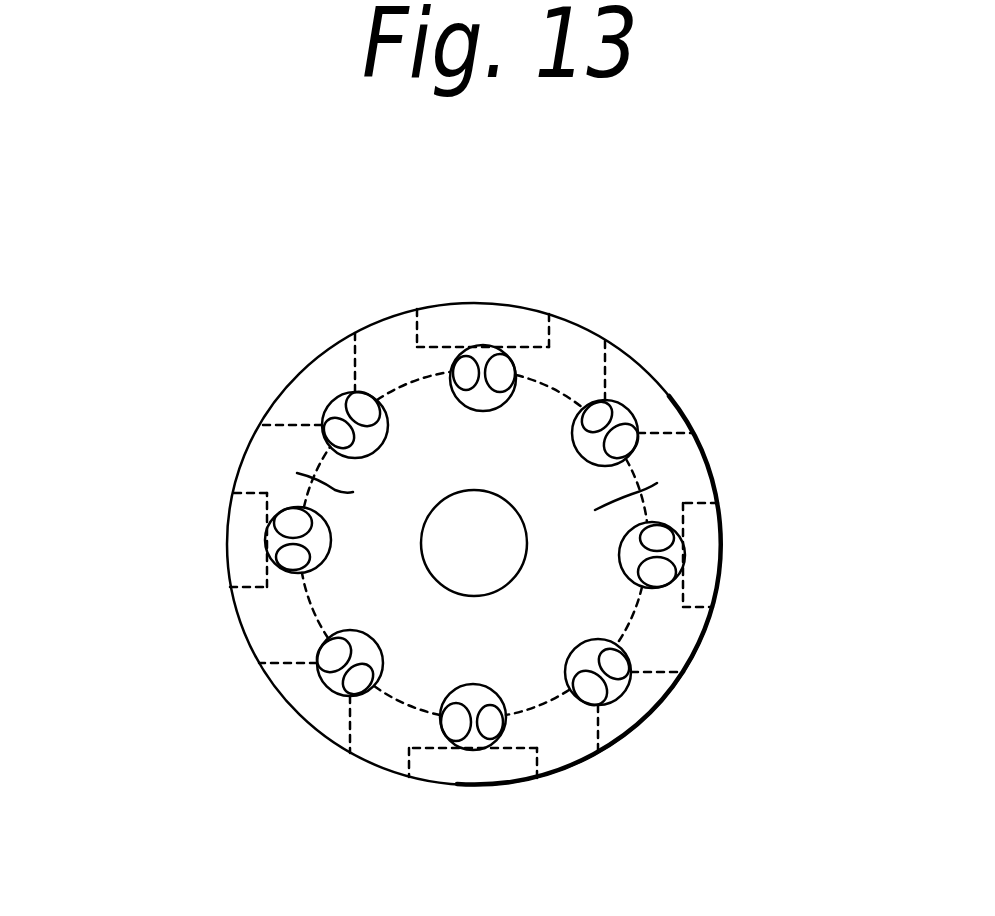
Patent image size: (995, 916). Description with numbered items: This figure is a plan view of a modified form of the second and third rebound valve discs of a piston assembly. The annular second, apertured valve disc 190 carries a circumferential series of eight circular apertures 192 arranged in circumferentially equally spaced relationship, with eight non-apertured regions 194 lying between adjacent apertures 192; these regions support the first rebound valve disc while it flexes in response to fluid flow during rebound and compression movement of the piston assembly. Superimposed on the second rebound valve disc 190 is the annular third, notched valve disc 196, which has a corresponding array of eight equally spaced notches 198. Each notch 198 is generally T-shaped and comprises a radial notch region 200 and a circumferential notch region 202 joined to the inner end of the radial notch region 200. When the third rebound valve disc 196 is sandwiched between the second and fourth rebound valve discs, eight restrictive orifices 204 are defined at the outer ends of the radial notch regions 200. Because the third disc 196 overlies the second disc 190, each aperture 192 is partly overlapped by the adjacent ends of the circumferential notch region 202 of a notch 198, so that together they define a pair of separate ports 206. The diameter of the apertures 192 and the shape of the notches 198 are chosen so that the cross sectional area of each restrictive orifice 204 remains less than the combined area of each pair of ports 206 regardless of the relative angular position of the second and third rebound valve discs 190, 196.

The second apertured valve disc 190 is at (425, 437).
The circular apertures 192 is at (474, 408).
The non-apertured regions 194 is at (477, 514).
The third notched valve disc 196 is at (322, 600).
The notches 198 is at (712, 470).
The radial notch region 200 is at (705, 438).
The circumferential notch region 202 is at (720, 510).
The restrictive orifices 204 is at (577, 318).
The ports 206 is at (357, 404).